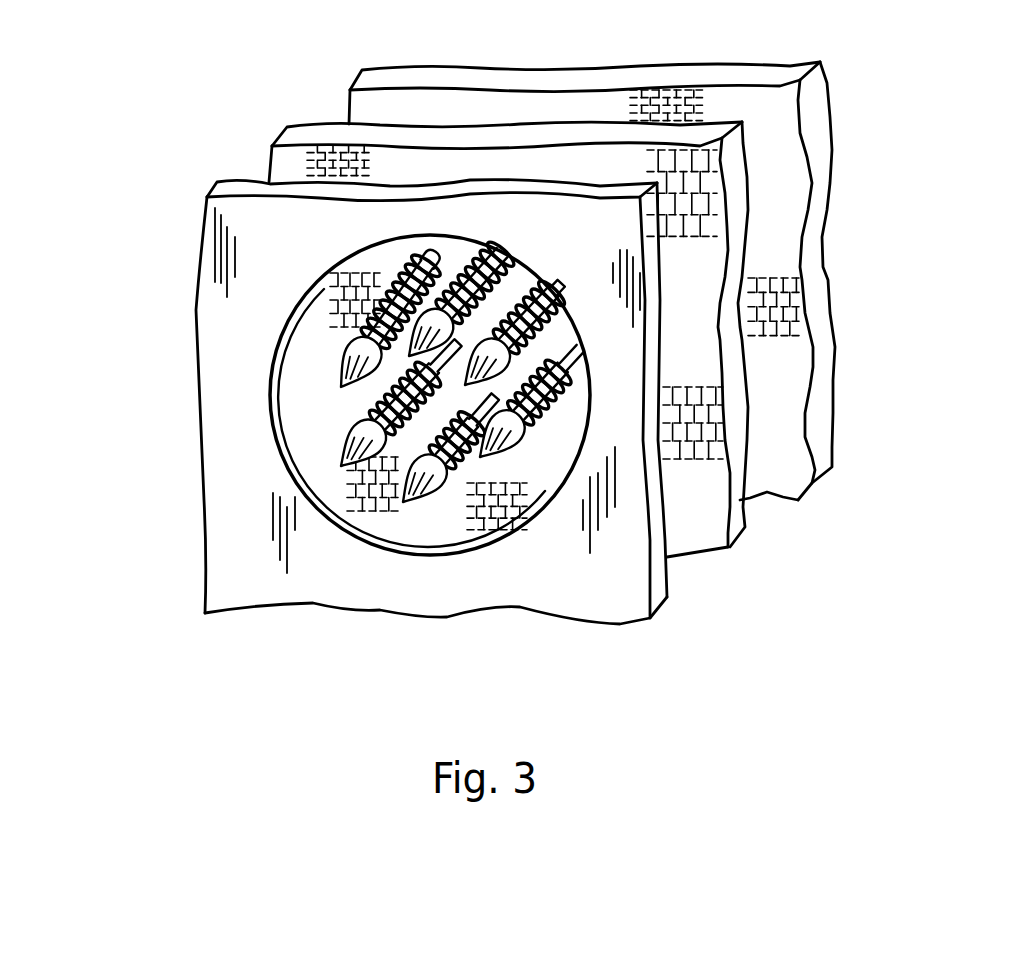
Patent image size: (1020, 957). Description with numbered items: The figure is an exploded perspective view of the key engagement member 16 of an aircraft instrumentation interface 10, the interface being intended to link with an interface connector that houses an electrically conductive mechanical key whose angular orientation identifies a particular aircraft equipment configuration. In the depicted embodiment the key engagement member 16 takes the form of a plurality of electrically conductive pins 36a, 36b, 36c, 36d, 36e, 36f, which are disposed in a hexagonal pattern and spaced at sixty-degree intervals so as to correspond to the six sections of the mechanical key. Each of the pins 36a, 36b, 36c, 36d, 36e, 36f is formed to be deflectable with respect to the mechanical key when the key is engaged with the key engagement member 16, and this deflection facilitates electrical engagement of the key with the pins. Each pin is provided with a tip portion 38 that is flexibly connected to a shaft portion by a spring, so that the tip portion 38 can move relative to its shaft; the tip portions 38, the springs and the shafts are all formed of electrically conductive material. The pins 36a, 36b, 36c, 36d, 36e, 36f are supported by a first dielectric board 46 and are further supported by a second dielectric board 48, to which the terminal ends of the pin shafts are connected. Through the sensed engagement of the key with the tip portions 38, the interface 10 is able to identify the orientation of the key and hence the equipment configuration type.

The aircraft instrumentation interface 10 is at (150, 262).
The key engagement member 16 is at (135, 294).
The electrically conductive pin 36a is at (338, 482).
The electrically conductive pin 36b is at (436, 528).
The electrically conductive pin 36c is at (532, 445).
The electrically conductive pin 36d is at (519, 285).
The electrically conductive pin 36e is at (420, 250).
The electrically conductive pin 36f is at (325, 350).
The tip portion 38 is at (420, 307).
The first dielectric board 46 is at (730, 548).
The second dielectric board 48 is at (800, 377).